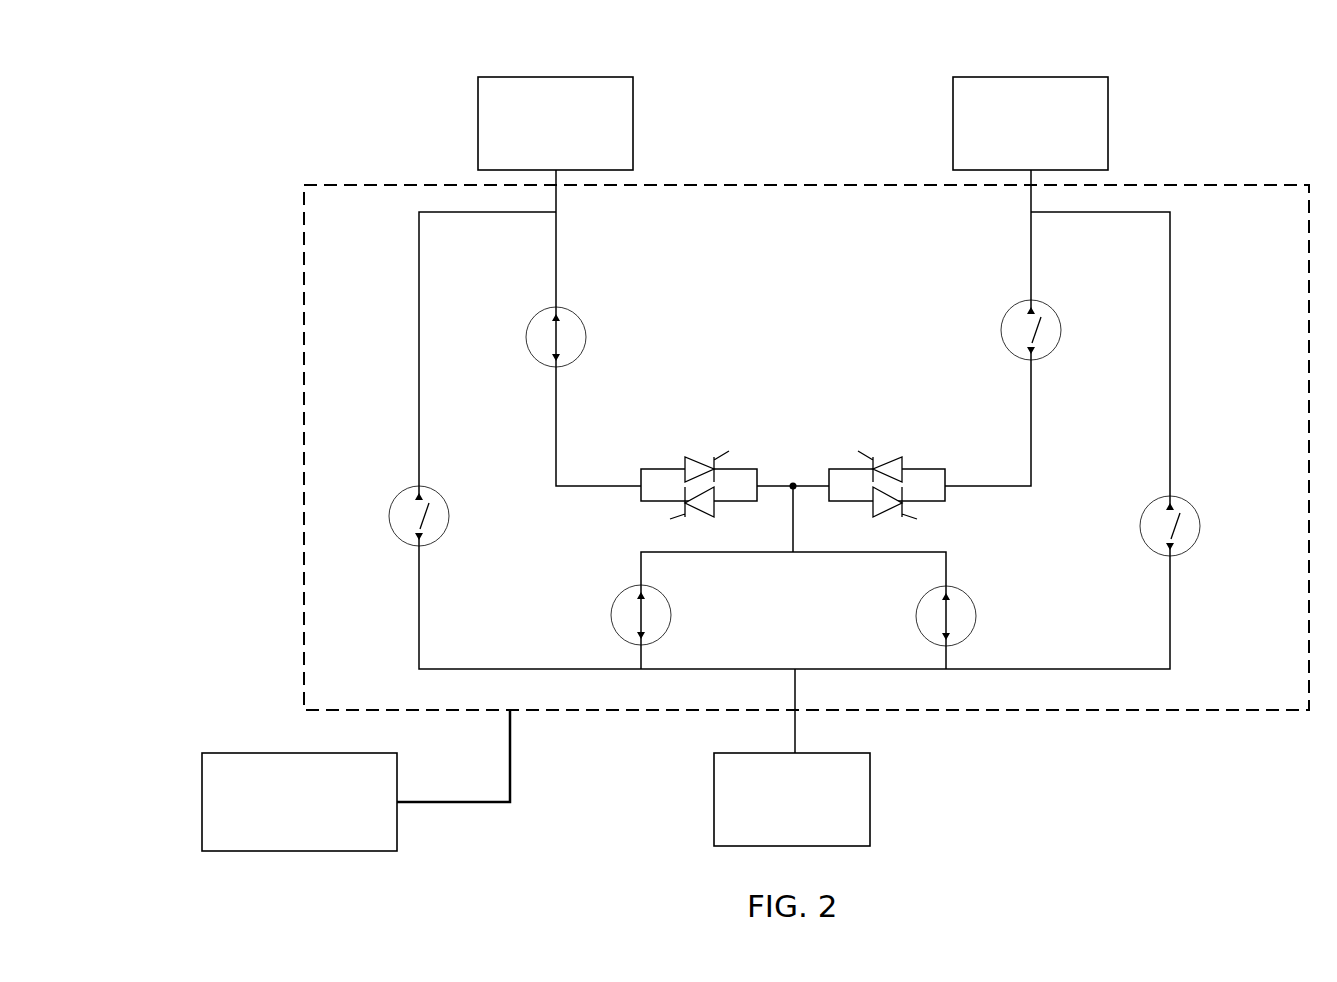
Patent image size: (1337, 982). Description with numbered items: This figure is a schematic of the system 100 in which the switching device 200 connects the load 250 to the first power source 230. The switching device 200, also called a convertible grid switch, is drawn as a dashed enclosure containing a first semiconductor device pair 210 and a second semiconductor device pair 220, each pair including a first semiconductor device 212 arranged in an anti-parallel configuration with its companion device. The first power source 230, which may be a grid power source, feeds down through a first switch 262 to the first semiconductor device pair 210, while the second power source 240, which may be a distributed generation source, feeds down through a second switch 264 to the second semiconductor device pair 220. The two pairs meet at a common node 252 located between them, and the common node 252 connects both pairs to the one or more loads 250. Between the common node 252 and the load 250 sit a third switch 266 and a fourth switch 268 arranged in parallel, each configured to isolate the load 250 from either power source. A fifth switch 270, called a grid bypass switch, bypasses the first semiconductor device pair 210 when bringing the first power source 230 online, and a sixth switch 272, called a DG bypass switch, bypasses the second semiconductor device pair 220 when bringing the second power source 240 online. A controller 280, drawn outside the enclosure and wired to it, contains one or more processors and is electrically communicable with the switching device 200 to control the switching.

The system 100 is at (265, 86).
The switching device 200 is at (303, 291).
The first semiconductor device pair 210 is at (745, 466).
The first semiconductor device 212 is at (686, 458).
The second semiconductor device pair 220 is at (932, 468).
The first power source 230 is at (633, 95).
The second power source 240 is at (1108, 95).
The load 250 is at (870, 762).
The common node 252 is at (794, 482).
The first switch 262 is at (546, 310).
The second switch 264 is at (1021, 303).
The third switch 266 is at (633, 588).
The fourth switch 268 is at (957, 590).
The fifth switch 270 is at (411, 488).
The sixth switch 272 is at (1188, 500).
The controller 280 is at (217, 752).